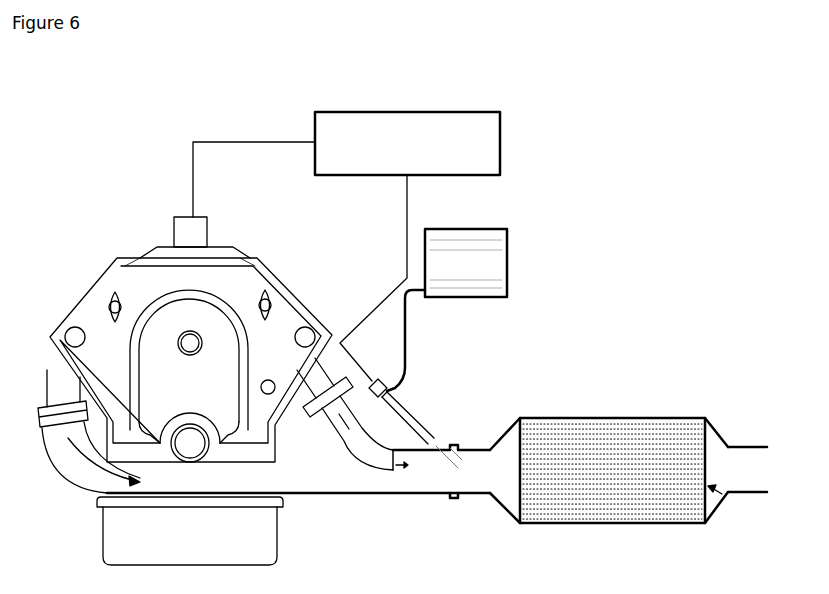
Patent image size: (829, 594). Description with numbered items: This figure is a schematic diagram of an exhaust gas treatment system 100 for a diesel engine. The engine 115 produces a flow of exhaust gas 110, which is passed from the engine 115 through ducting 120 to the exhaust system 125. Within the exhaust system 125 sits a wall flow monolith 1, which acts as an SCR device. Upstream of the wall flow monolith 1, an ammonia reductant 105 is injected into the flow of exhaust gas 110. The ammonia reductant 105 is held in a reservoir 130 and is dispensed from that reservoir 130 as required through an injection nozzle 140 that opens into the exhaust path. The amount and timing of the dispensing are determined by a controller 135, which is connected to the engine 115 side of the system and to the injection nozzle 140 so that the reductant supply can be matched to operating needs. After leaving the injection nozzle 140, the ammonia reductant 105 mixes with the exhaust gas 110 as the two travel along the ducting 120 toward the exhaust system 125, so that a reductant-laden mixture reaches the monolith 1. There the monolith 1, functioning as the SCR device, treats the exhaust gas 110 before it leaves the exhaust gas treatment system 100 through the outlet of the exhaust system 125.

The exhaust gas treatment system 100 is at (579, 365).
The ammonia reductant 105 is at (444, 315).
The exhaust gas 110 is at (82, 486).
The engine 115 is at (117, 257).
The ducting 120 is at (290, 498).
The exhaust system 125 is at (499, 503).
The reservoir 130 is at (468, 229).
The controller 135 is at (403, 112).
The injection nozzle 140 is at (405, 415).
The wall flow monolith 1 is at (723, 496).